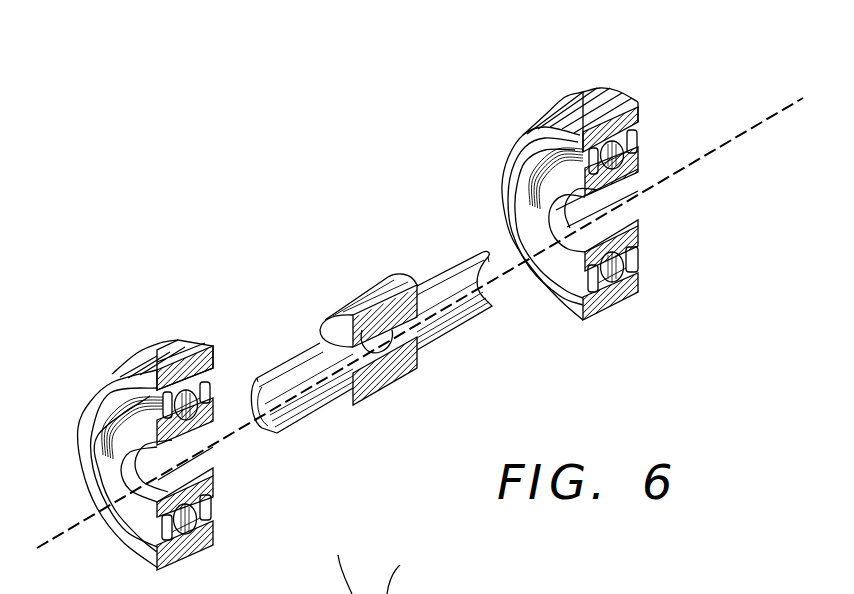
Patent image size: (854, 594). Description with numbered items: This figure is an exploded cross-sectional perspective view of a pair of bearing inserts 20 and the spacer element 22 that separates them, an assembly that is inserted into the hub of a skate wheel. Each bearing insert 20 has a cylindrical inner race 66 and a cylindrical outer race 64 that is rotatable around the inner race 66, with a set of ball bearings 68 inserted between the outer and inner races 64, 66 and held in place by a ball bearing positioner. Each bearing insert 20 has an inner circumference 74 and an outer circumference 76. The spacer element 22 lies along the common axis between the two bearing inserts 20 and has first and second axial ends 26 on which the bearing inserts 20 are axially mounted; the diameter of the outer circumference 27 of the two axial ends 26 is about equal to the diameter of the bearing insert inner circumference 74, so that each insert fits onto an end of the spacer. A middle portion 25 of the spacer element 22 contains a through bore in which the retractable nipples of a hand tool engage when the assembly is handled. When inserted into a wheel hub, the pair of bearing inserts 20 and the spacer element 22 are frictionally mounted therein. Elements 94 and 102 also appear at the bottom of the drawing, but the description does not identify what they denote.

The bearing insert 20 is at (145, 362).
The spacer element 22 is at (370, 300).
The middle portion 25 is at (340, 308).
The axial end 26 is at (453, 328).
The outer circumference 27 is at (257, 378).
The outer race 64 is at (173, 342).
The inner race 66 is at (220, 458).
The ball bearings 68 is at (190, 512).
The inner circumference 74 is at (110, 537).
The outer circumference 76 is at (112, 374).
The support member 94 is at (400, 565).
The bracket 102 is at (338, 555).